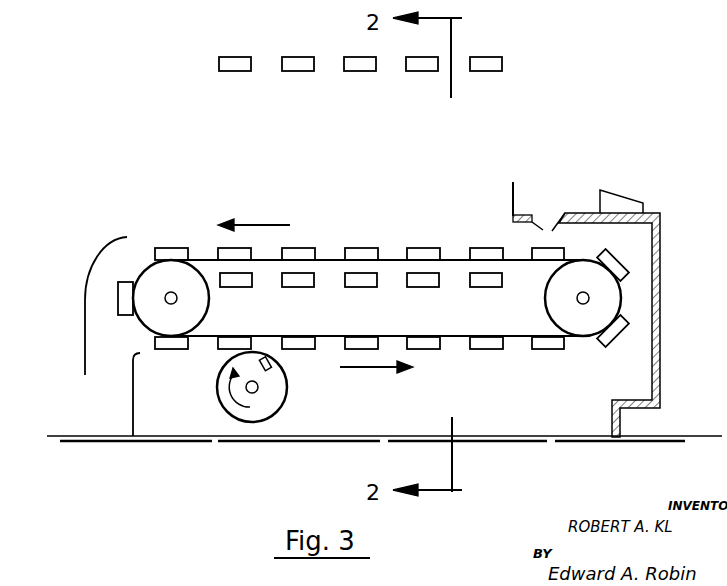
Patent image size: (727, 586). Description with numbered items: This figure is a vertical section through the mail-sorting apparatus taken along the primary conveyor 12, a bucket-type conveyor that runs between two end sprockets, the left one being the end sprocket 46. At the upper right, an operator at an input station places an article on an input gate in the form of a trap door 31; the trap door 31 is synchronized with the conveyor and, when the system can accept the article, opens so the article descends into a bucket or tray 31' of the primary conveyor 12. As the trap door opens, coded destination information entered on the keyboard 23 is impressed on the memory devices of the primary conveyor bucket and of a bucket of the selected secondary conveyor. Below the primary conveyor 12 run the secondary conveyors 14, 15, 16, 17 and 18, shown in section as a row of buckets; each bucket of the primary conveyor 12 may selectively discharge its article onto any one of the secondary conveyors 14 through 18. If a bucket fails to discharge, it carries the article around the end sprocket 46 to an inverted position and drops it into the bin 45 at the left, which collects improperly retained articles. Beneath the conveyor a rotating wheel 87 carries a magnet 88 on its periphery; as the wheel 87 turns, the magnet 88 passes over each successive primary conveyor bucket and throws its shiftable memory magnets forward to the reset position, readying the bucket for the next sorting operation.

The primary conveyor 12 is at (325, 260).
The secondary conveyor 14 is at (229, 71).
The secondary conveyor 15 is at (292, 71).
The secondary conveyor 16 is at (354, 71).
The secondary conveyor 17 is at (416, 71).
The secondary conveyor 18 is at (482, 71).
The keyboard 23 is at (625, 189).
The trap door 31 is at (534, 202).
The bucket or tray 31' is at (564, 245).
The bin 45 is at (60, 383).
The end sprocket 46 is at (153, 274).
The wheel 87 is at (222, 406).
The magnet 88 is at (269, 366).